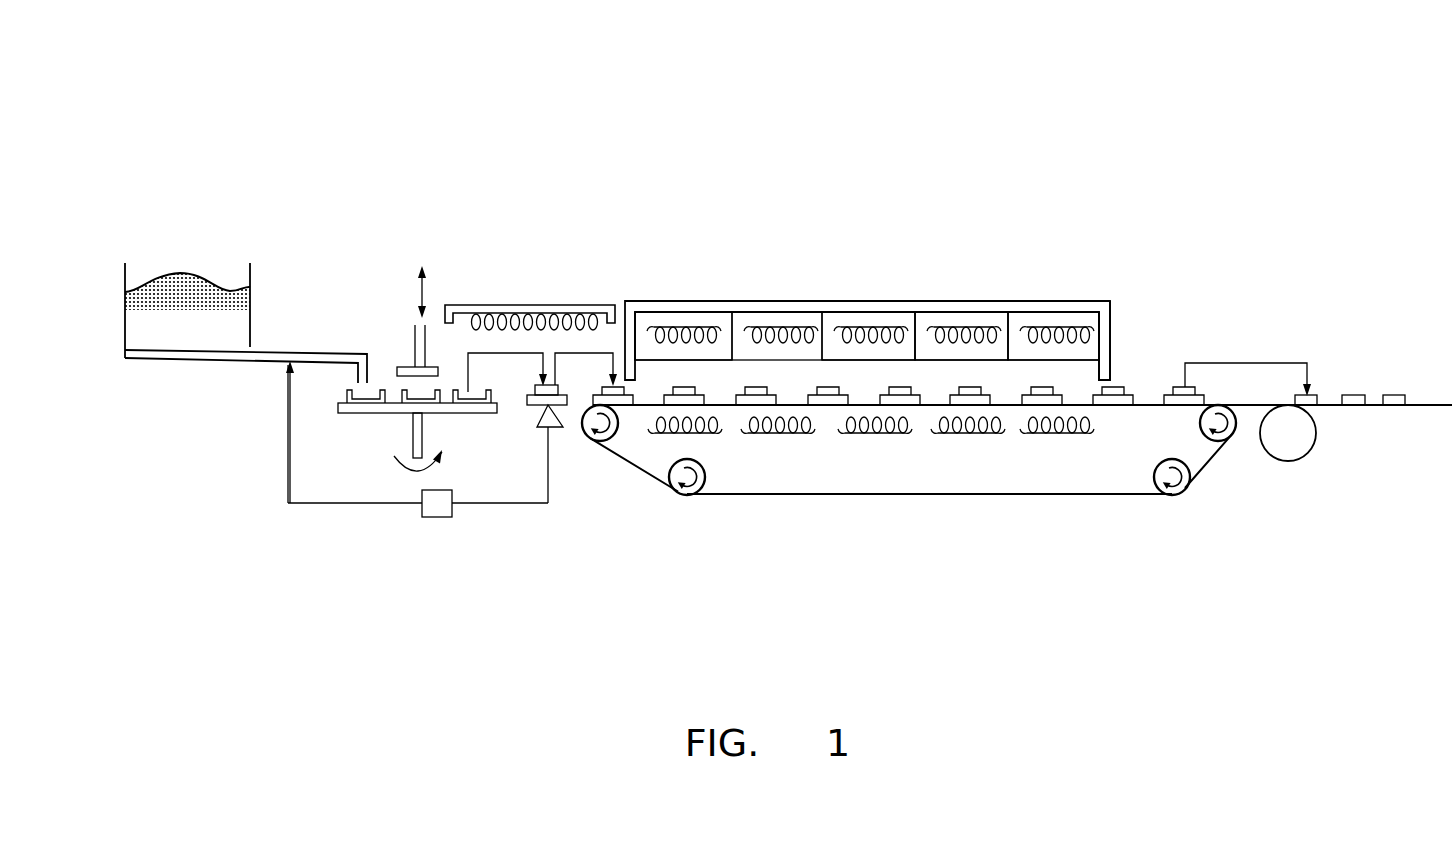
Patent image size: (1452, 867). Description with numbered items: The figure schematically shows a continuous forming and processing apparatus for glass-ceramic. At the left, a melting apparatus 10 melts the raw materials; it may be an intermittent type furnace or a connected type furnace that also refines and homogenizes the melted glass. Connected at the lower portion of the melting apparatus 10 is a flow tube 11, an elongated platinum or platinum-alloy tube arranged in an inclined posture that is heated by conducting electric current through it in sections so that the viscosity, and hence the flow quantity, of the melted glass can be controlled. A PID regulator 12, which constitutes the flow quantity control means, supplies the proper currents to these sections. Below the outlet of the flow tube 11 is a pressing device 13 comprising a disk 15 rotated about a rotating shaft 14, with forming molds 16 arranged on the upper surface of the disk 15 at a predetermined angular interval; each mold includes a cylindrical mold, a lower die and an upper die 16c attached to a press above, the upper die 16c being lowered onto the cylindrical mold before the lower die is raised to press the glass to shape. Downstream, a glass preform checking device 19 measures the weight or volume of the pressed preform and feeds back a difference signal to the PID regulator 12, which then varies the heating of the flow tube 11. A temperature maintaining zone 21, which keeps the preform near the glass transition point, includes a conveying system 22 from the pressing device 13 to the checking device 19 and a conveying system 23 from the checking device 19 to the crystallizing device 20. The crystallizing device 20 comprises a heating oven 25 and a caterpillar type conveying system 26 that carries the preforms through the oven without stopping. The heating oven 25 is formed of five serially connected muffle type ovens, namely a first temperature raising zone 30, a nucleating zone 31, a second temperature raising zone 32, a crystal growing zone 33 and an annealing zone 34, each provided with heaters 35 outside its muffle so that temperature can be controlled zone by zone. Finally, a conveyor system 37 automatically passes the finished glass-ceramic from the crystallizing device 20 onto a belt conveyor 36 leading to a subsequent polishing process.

The melting apparatus 10 is at (253, 276).
The flow tube 11 is at (328, 351).
The PID regulator 12 is at (438, 517).
The pressing device 13 is at (388, 330).
The rotating shaft 14 is at (424, 426).
The disk 15 is at (338, 410).
The forming molds 16 is at (368, 403).
The upper die 16c is at (432, 325).
The glass preform checking device 19 is at (569, 443).
The crystallizing device 20 is at (960, 330).
The temperature maintaining zone 21 is at (560, 306).
The conveying system 22 is at (500, 352).
The conveying system 23 is at (593, 352).
The heating oven 25 is at (802, 321).
The conveying system 26 is at (928, 494).
The first temperature raising zone 30 is at (715, 317).
The nucleating zone 31 is at (872, 326).
The second temperature raising zone 32 is at (964, 288).
The crystal growing zone 33 is at (1064, 327).
The annealing zone 34 is at (1110, 307).
The heaters 35 is at (668, 332).
The belt conveyor 36 is at (1417, 405).
The conveyor system 37 is at (1250, 362).